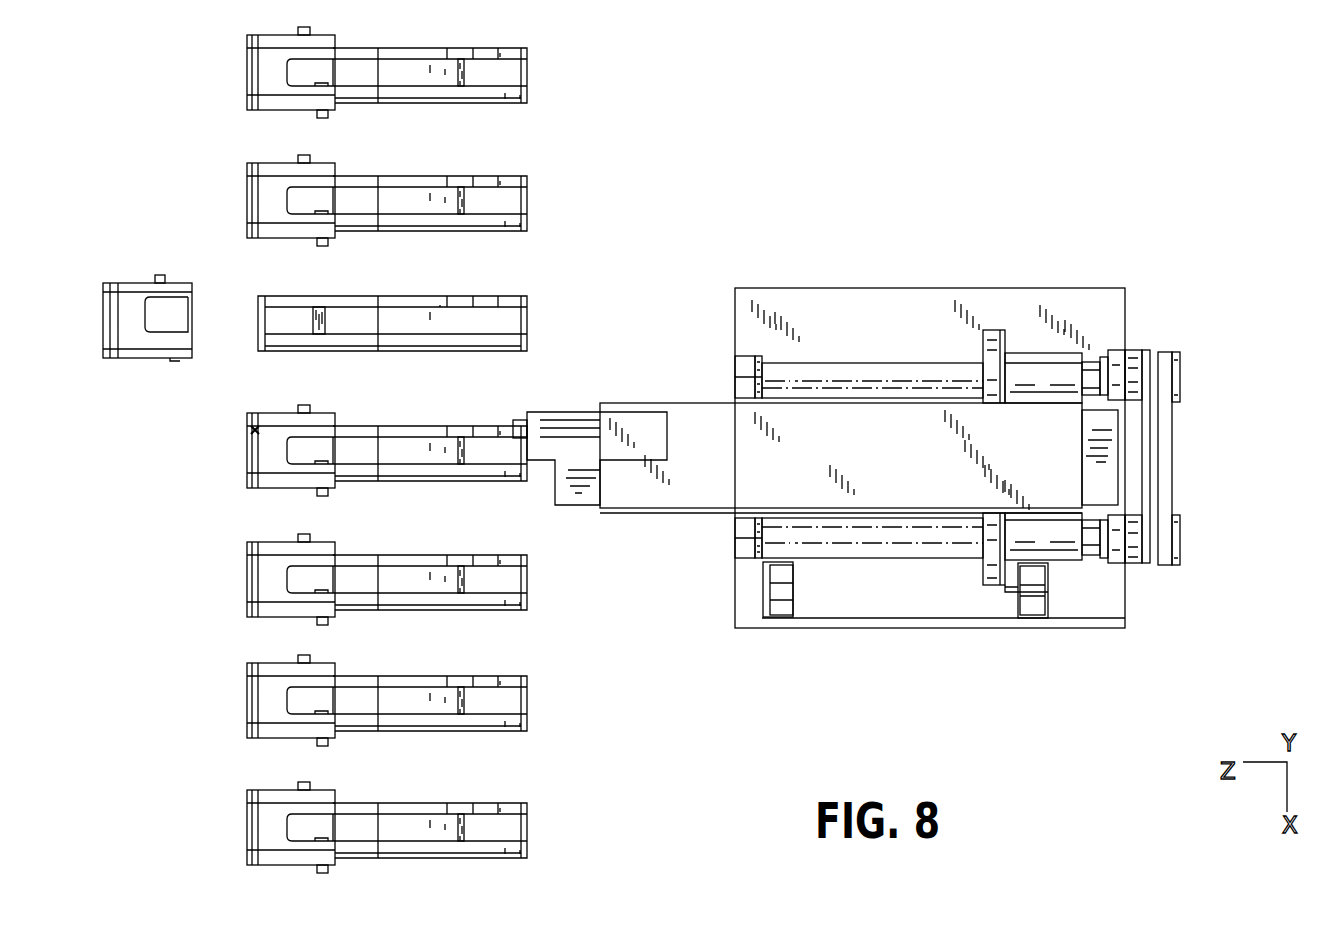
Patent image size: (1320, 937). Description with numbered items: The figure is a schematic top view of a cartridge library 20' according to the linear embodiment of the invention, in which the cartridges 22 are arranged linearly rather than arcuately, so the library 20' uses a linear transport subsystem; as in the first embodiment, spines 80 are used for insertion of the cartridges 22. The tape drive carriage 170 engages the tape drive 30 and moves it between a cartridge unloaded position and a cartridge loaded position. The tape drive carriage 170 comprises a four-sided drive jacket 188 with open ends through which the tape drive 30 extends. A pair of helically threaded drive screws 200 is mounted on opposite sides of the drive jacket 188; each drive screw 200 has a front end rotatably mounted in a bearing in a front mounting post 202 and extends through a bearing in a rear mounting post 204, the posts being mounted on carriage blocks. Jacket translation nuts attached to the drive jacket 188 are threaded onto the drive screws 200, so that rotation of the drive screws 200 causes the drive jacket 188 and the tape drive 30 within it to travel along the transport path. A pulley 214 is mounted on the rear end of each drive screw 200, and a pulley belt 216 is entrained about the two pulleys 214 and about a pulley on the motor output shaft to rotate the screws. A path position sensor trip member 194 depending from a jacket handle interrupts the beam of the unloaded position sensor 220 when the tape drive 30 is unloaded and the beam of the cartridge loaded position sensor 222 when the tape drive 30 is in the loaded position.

The library 20' is at (962, 110).
The cartridges 22 is at (381, 200).
The spines 80 is at (262, 205).
The front mounting post 202 is at (750, 356).
The drive screws 200 is at (832, 376).
The rear mounting post 204 is at (1102, 352).
The tape drive 30 is at (1112, 430).
The pulley 214 is at (1172, 362).
The pulley belt 216 is at (1160, 432).
The tape drive carriage 170 is at (930, 440).
The drive jacket 188 is at (815, 476).
The cartridge loaded position sensor 222 is at (782, 610).
The unloaded position sensor 220 is at (1028, 610).
The path position sensor trip member 194 is at (1045, 592).